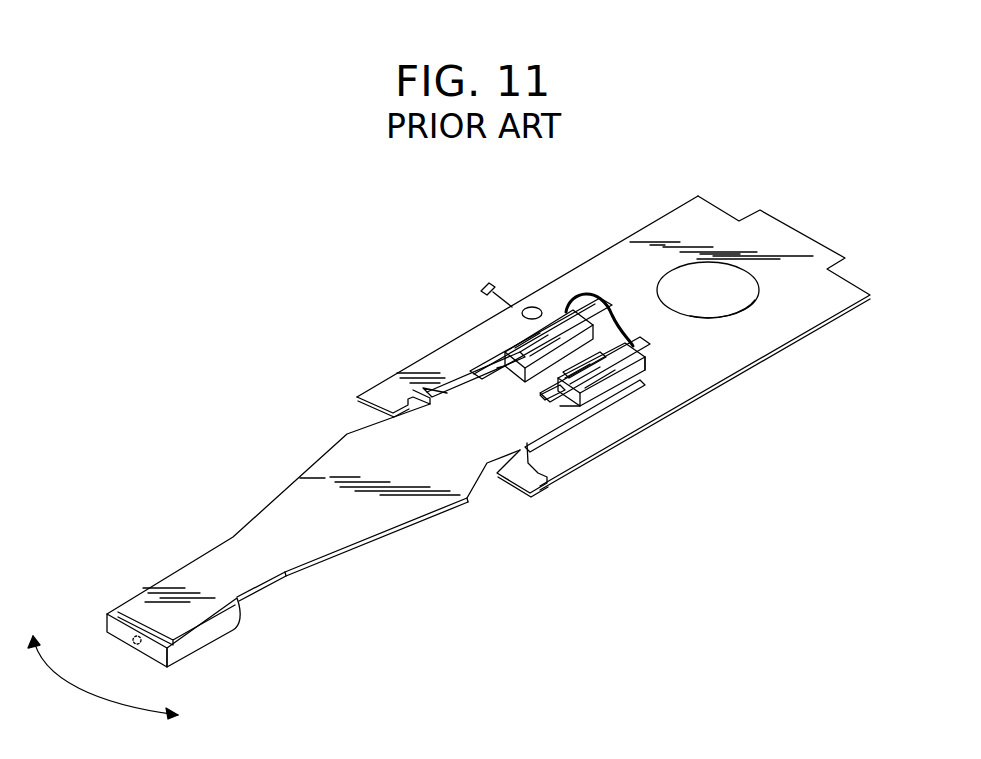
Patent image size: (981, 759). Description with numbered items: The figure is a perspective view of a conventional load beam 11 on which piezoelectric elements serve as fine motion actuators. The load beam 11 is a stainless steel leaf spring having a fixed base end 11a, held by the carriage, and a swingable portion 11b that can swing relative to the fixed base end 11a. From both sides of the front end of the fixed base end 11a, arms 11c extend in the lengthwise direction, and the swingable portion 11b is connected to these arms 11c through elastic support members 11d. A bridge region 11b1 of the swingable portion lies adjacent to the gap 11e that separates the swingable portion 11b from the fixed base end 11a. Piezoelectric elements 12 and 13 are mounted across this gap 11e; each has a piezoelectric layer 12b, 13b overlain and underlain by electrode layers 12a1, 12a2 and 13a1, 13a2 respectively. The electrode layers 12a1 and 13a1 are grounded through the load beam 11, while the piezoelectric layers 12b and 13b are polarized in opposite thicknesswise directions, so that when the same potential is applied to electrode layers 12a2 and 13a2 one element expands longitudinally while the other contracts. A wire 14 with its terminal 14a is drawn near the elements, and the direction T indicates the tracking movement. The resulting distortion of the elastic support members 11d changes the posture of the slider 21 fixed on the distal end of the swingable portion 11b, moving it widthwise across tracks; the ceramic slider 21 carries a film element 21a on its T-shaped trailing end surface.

The load beam 11 is at (627, 445).
The fixed base end 11a is at (793, 305).
The swingable portion 11b is at (363, 507).
The arm bridge portion 11b1 is at (565, 362).
The arm 11c is at (437, 372).
The elastic support member 11d is at (366, 394).
The gap 11e is at (557, 373).
The piezoelectric element 12 is at (668, 360).
The electrode layer 12a1 is at (636, 382).
The electrode layer 12a2 is at (648, 358).
The piezoelectric layer 12b is at (640, 392).
The piezoelectric element 13 is at (562, 308).
The electrode layer 13a1 is at (440, 368).
The electrode layer 13a2 is at (497, 366).
The piezoelectric layer 13b is at (522, 338).
The wire 14 is at (597, 292).
The wire terminal 14a is at (483, 283).
The slider 21 is at (197, 638).
The film element 21a is at (133, 642).
The tip direction T is at (101, 622).